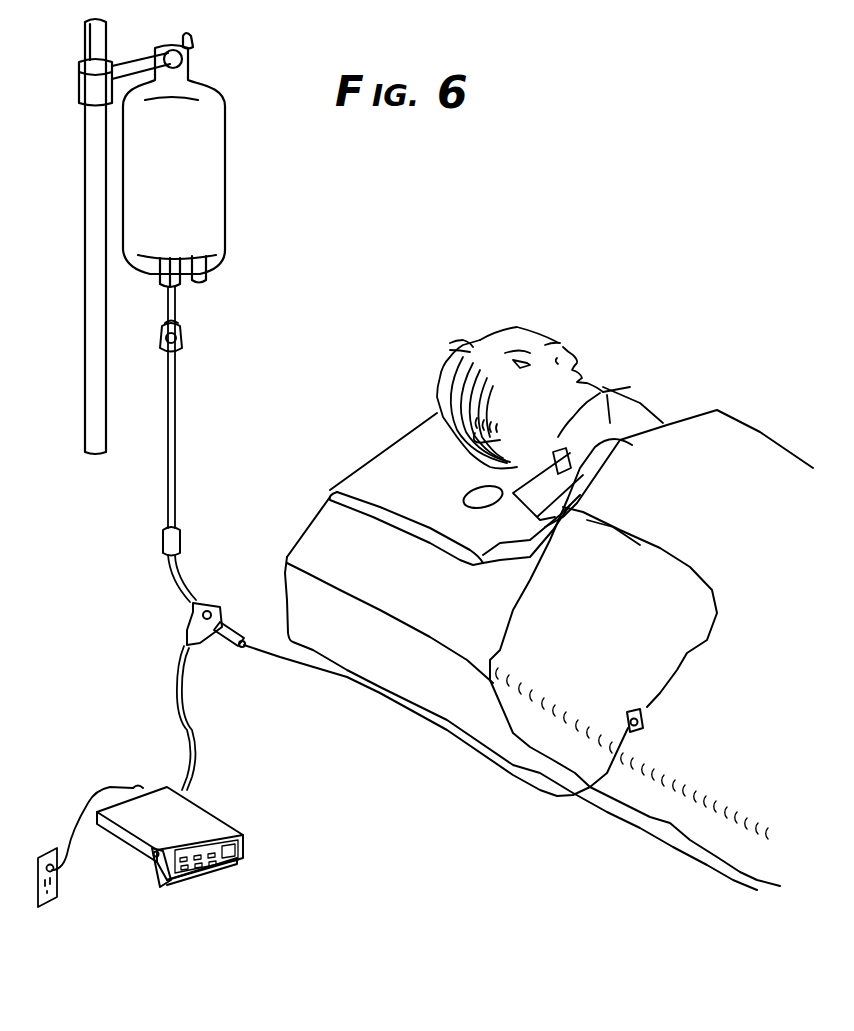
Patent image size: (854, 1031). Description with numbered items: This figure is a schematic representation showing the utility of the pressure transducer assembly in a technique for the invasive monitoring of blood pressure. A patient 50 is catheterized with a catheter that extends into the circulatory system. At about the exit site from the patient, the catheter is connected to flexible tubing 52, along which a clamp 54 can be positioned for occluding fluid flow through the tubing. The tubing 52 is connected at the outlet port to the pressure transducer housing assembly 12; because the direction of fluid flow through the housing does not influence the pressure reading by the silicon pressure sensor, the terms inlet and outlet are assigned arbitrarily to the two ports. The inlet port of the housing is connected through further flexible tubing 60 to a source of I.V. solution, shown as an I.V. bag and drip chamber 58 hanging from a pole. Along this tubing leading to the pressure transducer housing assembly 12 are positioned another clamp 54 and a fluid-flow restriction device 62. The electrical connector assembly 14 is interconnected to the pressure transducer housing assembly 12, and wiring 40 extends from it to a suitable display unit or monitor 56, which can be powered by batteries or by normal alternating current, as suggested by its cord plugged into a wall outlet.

The pressure transducer housing assembly 12 is at (214, 640).
The electrical connector assembly 14 is at (185, 635).
The wiring 40 is at (190, 722).
The patient 50 is at (688, 437).
The flexible tubing 52 is at (683, 568).
The clamp 54 is at (184, 340).
The display unit or monitor 56 is at (197, 818).
The I.V. bag and drip chamber 58 is at (224, 213).
The flexible tubing 60 is at (176, 500).
The fluid-flow restriction device 62 is at (183, 545).